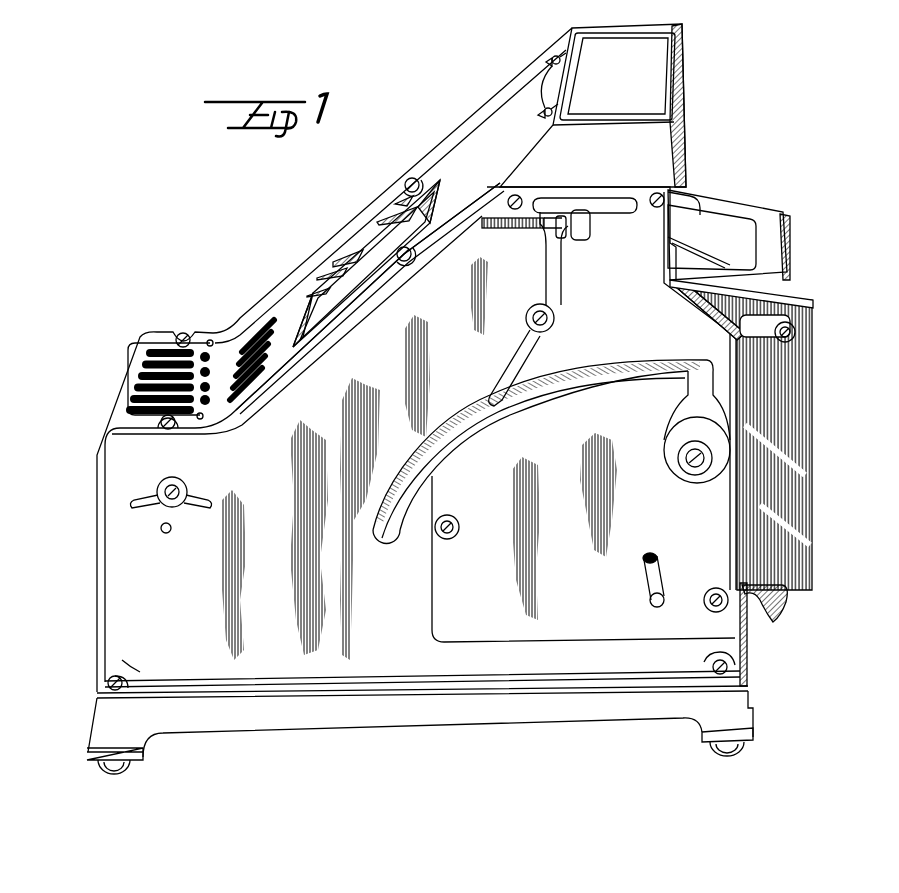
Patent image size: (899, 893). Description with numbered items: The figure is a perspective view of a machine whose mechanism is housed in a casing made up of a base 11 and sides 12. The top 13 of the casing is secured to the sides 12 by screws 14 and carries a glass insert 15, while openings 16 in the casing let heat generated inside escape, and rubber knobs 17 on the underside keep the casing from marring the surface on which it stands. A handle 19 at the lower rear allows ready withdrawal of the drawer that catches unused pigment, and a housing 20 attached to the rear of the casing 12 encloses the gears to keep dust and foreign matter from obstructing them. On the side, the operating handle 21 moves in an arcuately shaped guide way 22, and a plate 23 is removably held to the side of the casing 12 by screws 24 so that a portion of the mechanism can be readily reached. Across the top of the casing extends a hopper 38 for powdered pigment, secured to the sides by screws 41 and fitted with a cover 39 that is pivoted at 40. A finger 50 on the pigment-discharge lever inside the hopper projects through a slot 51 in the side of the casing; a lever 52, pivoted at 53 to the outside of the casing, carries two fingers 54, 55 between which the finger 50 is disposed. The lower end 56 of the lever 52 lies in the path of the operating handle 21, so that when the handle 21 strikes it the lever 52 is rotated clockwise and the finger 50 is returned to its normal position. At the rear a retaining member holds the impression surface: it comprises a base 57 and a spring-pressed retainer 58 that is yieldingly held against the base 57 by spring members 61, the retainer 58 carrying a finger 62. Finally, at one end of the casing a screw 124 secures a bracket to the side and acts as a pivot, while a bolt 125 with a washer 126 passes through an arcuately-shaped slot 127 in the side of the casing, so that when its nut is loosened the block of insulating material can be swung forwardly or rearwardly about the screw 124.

The base 11 is at (733, 689).
The sides 12 is at (120, 582).
The top 13 is at (462, 150).
The screws 14 is at (410, 180).
The glass insert 15 is at (348, 257).
The openings 16 is at (140, 365).
The rubber knobs 17 is at (125, 767).
The handle 19 is at (781, 600).
The housing 20 is at (800, 505).
The operating handle 21 is at (664, 447).
The guide way 22 is at (604, 362).
The plate 23 is at (440, 590).
The screws 24 is at (440, 535).
The hopper 38 is at (660, 148).
The cover 39 is at (665, 78).
The pivot 40 is at (545, 110).
The screws 41 is at (514, 195).
The finger 50 is at (568, 238).
The slot 51 is at (496, 232).
The lever 52 is at (554, 276).
The pivot 53 is at (554, 320).
The finger 54 is at (580, 212).
The finger 55 is at (545, 212).
The lower end 56 is at (505, 388).
The base 57 is at (745, 240).
The spring-pressed retainer 58 is at (758, 210).
The spring members 61 is at (690, 195).
The finger 62 is at (798, 297).
The screw 124 is at (170, 532).
The bolt 125 is at (176, 504).
The washer 126 is at (180, 484).
The arcuately-shaped slot 127 is at (192, 498).